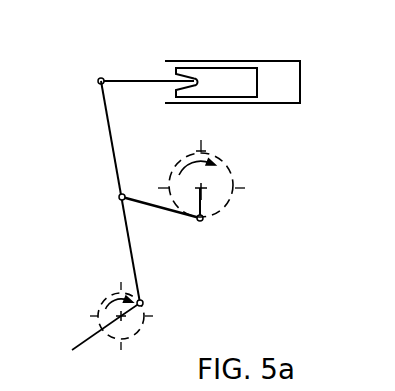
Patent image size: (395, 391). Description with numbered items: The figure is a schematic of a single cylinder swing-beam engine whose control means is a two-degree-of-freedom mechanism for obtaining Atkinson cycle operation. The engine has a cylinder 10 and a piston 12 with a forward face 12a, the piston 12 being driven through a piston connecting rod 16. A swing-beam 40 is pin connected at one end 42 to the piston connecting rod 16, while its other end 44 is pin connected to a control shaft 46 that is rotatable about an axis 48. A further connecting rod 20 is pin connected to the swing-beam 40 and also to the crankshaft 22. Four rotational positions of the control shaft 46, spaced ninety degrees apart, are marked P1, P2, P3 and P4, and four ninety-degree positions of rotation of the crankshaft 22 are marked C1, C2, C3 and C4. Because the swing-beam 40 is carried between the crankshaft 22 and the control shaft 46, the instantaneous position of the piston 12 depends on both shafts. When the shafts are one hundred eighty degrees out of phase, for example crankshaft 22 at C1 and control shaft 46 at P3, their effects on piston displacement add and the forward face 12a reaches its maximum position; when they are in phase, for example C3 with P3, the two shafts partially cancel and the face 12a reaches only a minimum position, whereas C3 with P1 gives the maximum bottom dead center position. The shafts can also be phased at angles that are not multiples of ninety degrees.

The cylinder 10 is at (273, 60).
The piston 12 is at (218, 75).
The forward face of the piston 12a is at (257, 88).
The piston connecting rod 16 is at (135, 80).
The connecting rod 20 is at (160, 210).
The crankshaft 22 is at (202, 200).
The swing-beam 40 is at (112, 160).
The end of swing-beam 42 is at (98, 82).
The other end of swing-beam 44 is at (143, 301).
The control shaft 46 is at (134, 309).
The axis 48 is at (81, 341).
The crankshaft rotational position C1 is at (220, 185).
The crankshaft rotational position C2 is at (200, 233).
The crankshaft rotational position C3 is at (144, 190).
The crankshaft rotational position C4 is at (203, 131).
The control shaft rotational position P1 is at (138, 316).
The control shaft rotational position P2 is at (117, 360).
The control shaft rotational position P3 is at (80, 318).
The control shaft rotational position P4 is at (117, 272).